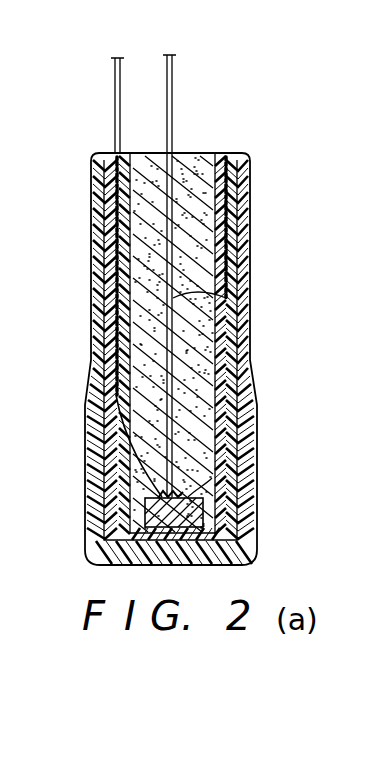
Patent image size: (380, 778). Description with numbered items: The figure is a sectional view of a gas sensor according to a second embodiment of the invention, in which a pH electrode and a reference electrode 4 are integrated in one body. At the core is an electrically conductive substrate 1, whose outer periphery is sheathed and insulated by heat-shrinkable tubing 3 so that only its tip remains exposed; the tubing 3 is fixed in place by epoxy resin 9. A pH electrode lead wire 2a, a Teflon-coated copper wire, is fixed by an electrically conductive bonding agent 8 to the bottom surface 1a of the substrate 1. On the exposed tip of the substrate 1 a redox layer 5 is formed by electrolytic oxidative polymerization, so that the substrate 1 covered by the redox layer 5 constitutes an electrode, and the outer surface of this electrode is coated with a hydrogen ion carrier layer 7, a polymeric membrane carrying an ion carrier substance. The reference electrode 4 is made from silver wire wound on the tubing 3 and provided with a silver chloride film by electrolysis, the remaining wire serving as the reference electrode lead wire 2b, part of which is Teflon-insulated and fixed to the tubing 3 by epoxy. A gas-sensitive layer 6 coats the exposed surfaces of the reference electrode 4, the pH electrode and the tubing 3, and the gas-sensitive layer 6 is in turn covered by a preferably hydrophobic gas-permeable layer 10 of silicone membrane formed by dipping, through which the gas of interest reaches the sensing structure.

The electrically conductive substrate 1 is at (227, 517).
The bottom surface of the electrically conductive substrate 1a is at (133, 410).
The pH electrode lead wire 2a is at (227, 303).
The reference electrode lead wire 2b is at (115, 100).
The heat-shrinkable tubing 3 is at (223, 396).
The reference electrode 4 is at (248, 185).
The redox layer 5 is at (253, 547).
The gas-sensitive layer 6 is at (232, 350).
The hydrogen ion carrier layer 7 is at (233, 435).
The electrically conductive bonding agent 8 is at (233, 478).
The epoxy resin 9 is at (230, 212).
The gas-permeable layer 10 is at (252, 367).